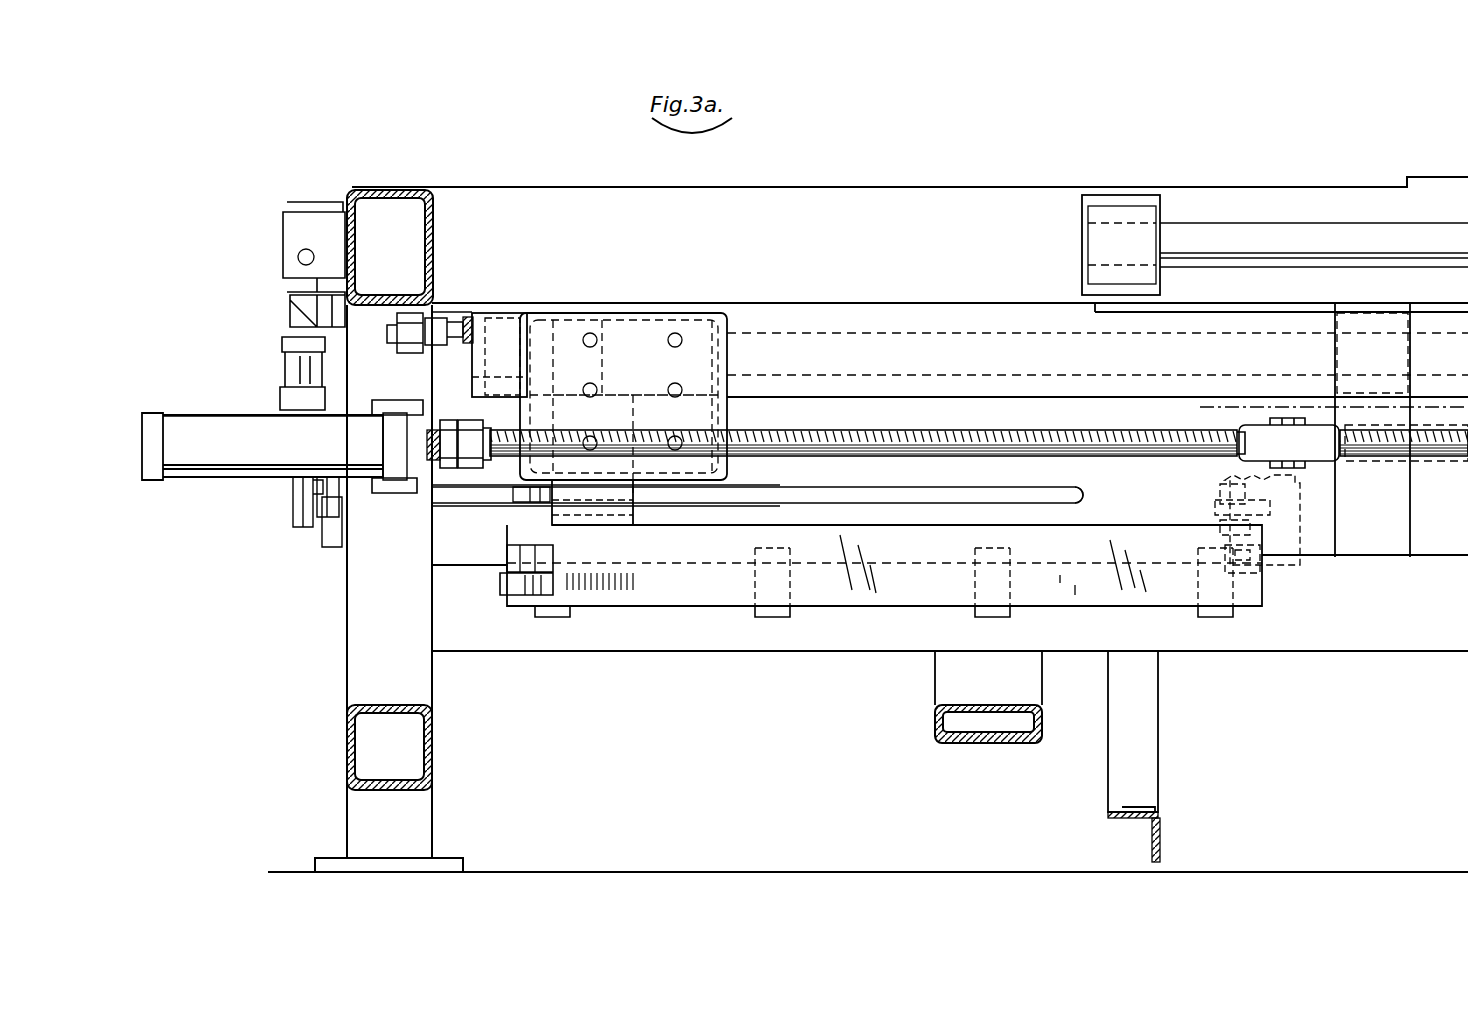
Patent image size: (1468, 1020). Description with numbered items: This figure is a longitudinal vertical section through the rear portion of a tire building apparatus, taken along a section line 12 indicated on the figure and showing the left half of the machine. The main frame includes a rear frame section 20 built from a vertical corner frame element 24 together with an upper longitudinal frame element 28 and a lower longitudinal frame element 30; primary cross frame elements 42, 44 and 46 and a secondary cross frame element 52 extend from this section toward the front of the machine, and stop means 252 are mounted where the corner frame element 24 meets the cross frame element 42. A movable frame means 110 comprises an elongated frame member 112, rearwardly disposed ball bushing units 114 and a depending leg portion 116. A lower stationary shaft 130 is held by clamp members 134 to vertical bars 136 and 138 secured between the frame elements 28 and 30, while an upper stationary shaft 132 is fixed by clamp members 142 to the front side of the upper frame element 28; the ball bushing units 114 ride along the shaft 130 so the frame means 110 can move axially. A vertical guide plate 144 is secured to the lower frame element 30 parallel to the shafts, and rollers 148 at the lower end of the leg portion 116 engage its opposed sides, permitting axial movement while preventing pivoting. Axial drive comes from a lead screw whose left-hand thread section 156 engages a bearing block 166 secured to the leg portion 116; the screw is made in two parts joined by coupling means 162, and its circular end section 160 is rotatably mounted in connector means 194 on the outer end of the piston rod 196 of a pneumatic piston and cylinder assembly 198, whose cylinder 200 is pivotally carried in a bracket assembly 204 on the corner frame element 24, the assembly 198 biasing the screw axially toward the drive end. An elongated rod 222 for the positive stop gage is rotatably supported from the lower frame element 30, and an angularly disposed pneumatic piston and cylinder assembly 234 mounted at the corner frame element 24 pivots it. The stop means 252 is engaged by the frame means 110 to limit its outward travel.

The section line 12 is at (358, 363).
The rear frame section 20 is at (980, 186).
The vertical corner frame element 24 is at (357, 598).
The upper longitudinal frame element 28 is at (772, 191).
The lower longitudinal frame element 30 is at (733, 651).
The primary cross frame element 42 is at (435, 230).
The primary cross frame element 44 is at (432, 730).
The primary cross frame element 46 is at (935, 727).
The secondary cross frame element 52 is at (1160, 829).
The movable frame means 110 is at (668, 292).
The elongated frame member 112 is at (873, 318).
The ball bushing units 114 is at (560, 312).
The depending leg portion 116 is at (628, 546).
The lower stationary shaft 130 is at (968, 330).
The upper stationary shaft 132 is at (1215, 236).
The clamp members 134 is at (500, 325).
The vertical bar 136 is at (446, 306).
The vertical bar 138 is at (1402, 488).
The clamp members 142 is at (1087, 210).
The vertical guide plate 144 is at (848, 600).
The rollers 148 is at (503, 547).
The left-hand thread section 156 is at (908, 430).
The second circular end section 160 is at (490, 436).
The coupling means 162 is at (1238, 456).
The bearing block 166 is at (500, 502).
The connector means 194 is at (448, 420).
The piston rod 196 is at (427, 437).
The pneumatic piston and cylinder assembly 198 is at (244, 411).
The cylinder 200 is at (188, 419).
The bracket assembly 204 is at (400, 493).
The elongated rod 222 is at (868, 492).
The pneumatic piston and cylinder assembly 234 is at (282, 368).
The stop means 252 is at (455, 320).